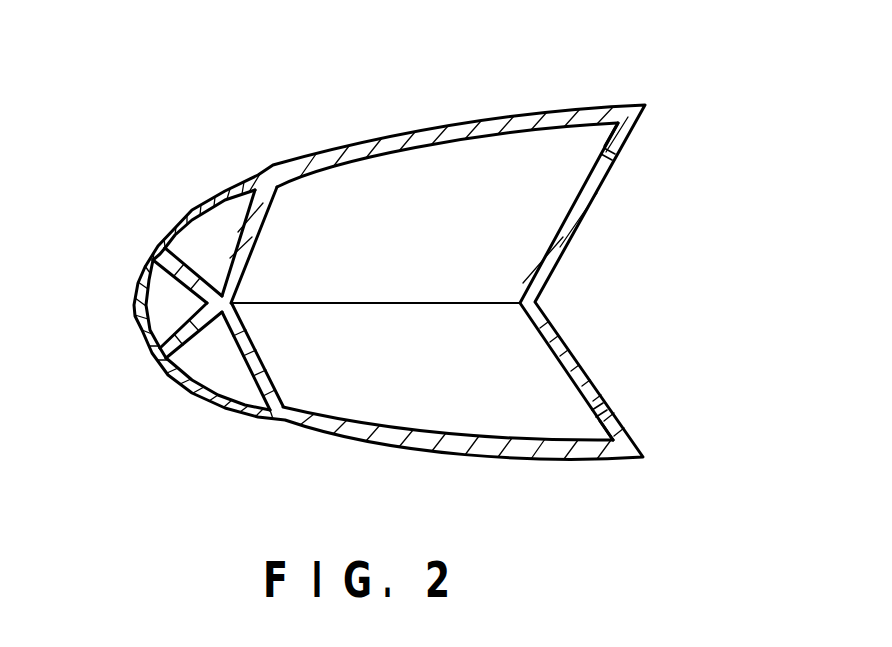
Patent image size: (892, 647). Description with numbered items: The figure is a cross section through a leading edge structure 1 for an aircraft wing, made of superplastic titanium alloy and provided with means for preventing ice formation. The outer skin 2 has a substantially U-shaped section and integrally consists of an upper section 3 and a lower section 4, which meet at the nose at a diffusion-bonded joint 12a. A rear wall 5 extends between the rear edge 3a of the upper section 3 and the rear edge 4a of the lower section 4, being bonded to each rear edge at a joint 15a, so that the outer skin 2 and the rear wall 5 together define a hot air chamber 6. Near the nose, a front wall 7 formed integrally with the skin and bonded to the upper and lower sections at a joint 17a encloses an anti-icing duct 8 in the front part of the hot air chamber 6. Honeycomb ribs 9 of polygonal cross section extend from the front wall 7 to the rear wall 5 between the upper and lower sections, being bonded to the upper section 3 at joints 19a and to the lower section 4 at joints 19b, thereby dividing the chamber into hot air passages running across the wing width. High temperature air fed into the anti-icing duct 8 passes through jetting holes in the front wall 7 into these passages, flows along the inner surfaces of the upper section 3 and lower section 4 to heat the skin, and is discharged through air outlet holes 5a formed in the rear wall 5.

The leading edge structure 1 is at (393, 96).
The outer skin 2 is at (273, 162).
The upper section 3 is at (454, 116).
The rear edge of the upper section 3a is at (644, 102).
The lower section 4 is at (447, 459).
The rear edge of the lower section 4a is at (642, 461).
The rear wall 5 is at (590, 210).
The air outlet holes 5a is at (622, 152).
The hot air chamber 6 is at (517, 152).
The front wall 7 is at (187, 272).
The anti-icing duct 8 is at (158, 288).
The honeycomb ribs 9 is at (518, 240).
The joint of the sections of the outer skin 12a is at (137, 316).
The joint of the rear edge and the rear wall 15a is at (623, 123).
The joint of the outer skin section and the front wall 17a is at (155, 248).
The joints of the upper section and the ribs 19a is at (330, 160).
The joints of the lower section and the ribs 19b is at (341, 426).